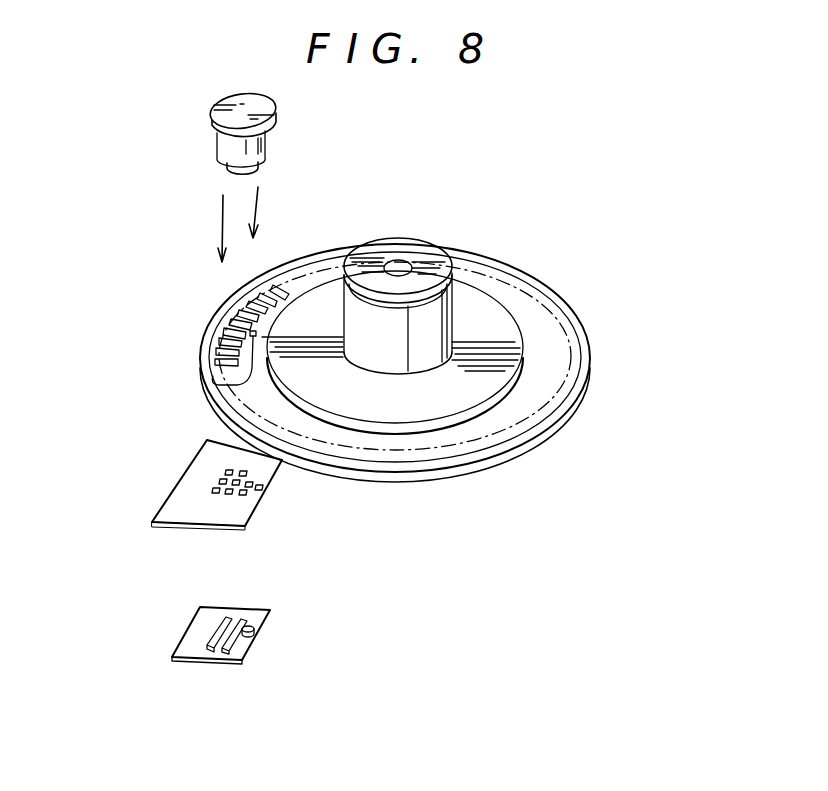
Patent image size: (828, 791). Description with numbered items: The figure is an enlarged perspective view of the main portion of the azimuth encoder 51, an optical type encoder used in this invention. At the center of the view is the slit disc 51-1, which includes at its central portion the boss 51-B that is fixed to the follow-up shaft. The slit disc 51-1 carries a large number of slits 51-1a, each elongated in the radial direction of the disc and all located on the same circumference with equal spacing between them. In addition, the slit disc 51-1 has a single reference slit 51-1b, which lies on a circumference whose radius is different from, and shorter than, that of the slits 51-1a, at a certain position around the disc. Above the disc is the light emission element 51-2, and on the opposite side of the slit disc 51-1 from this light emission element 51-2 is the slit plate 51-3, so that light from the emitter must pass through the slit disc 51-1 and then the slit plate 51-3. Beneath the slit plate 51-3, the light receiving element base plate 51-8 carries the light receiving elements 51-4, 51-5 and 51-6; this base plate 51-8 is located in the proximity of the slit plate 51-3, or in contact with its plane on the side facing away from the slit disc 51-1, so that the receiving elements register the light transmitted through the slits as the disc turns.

The azimuth encoder 51 is at (600, 504).
The slit disc 51-1 is at (574, 328).
The slits 51-1a is at (222, 318).
The reference slit 51-1b is at (232, 376).
The boss 51-B is at (420, 253).
The light emission element 51-2 is at (274, 115).
The slit plate 51-3 is at (186, 492).
The light receiving element base plate 51-8 is at (196, 626).
The light receiving element 51-4 is at (198, 664).
The light receiving element 51-5 is at (236, 666).
The light receiving element 51-6 is at (258, 624).